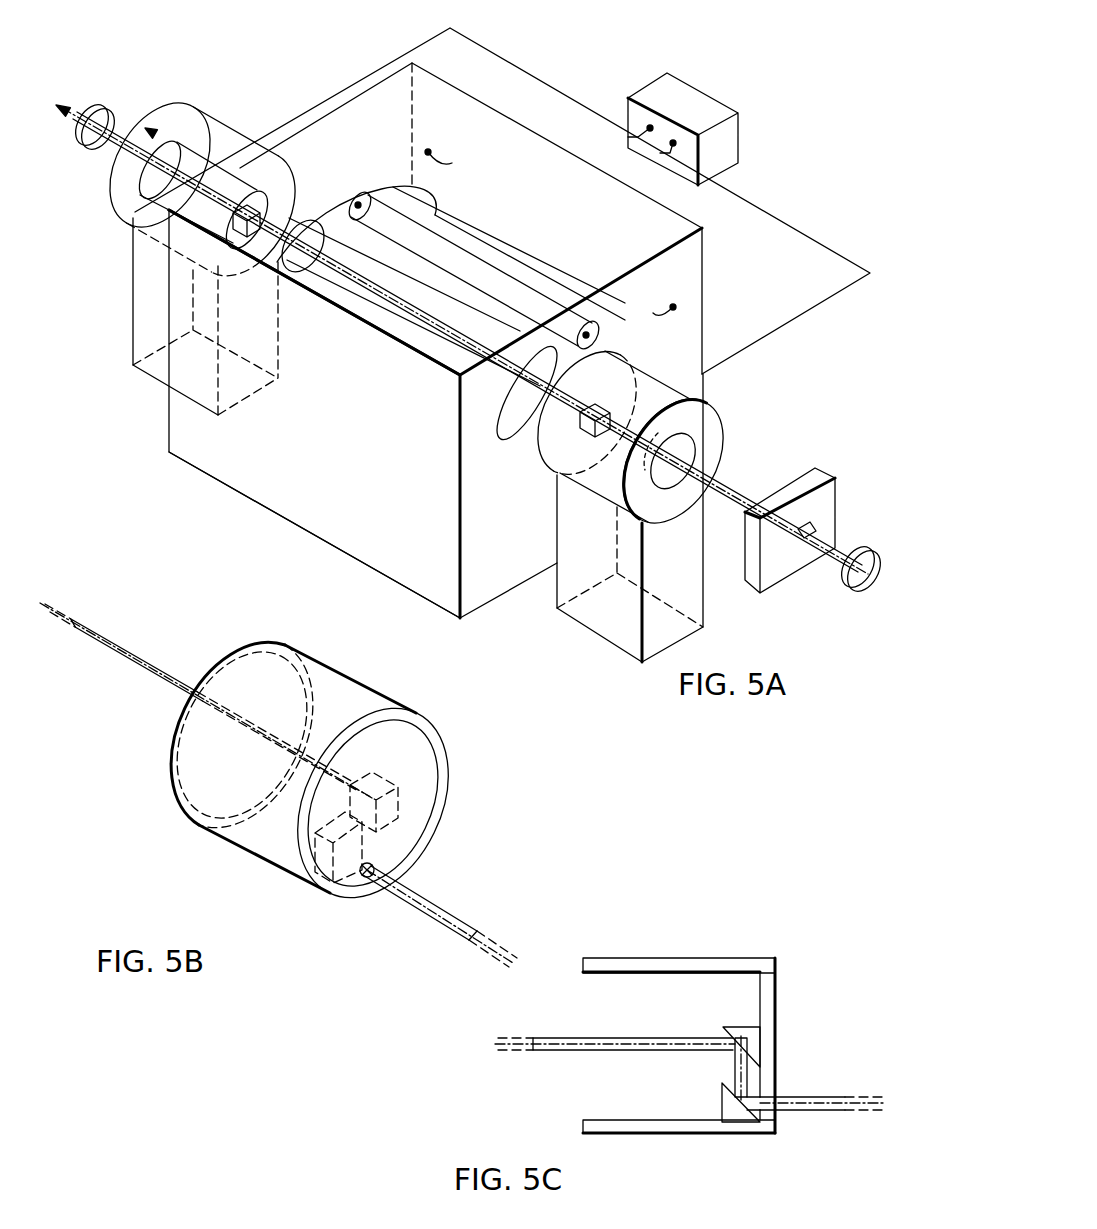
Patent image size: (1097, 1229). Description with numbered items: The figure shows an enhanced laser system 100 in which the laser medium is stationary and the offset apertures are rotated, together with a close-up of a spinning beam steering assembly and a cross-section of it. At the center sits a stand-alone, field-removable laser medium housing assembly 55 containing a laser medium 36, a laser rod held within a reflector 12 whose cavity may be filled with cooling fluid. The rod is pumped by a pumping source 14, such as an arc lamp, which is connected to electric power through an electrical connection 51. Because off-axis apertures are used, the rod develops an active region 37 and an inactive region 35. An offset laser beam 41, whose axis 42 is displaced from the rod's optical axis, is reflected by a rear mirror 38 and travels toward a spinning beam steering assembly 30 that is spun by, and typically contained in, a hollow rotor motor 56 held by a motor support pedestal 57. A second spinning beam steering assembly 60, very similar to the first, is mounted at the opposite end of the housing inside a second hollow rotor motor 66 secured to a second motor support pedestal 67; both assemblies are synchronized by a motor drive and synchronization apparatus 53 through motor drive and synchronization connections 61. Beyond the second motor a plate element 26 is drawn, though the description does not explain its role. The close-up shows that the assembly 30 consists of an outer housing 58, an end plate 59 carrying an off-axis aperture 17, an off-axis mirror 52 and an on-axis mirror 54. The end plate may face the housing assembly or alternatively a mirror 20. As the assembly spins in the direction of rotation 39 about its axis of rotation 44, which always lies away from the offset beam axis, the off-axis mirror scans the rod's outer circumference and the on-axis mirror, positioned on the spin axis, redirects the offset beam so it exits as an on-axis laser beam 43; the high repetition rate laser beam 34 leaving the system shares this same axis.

In FIG. 5A, the reflector 12 is at (463, 213).
In FIG. 5A, the pumping source 14 is at (472, 247).
In FIG. 5B, the off-axis aperture 17 is at (363, 883).
In FIG. 5C, the off-axis aperture 17 is at (767, 1087).
In FIG. 5A, the mirror 20 is at (112, 115).
In FIG. 5A, the end plate 26 is at (815, 468).
In FIG. 5A, the spinning beam steering assembly 30 is at (240, 160).
In FIG. 5B, the spinning beam steering assembly 30 is at (446, 711).
In FIG. 5C, the spinning beam steering assembly 30 is at (683, 908).
In FIG. 5A, the high repetition rate laser beam 34 is at (72, 102).
In FIG. 5A, the inactive region 35 is at (470, 307).
In FIG. 5A, the laser medium 36 is at (443, 367).
In FIG. 5A, the active region 37 is at (282, 300).
In FIG. 5A, the rear mirror 38 is at (862, 583).
In FIG. 5A, the direction of rotation 39 is at (137, 200).
In FIG. 5A, the offset laser beam 41 is at (273, 220).
In FIG. 5B, the offset laser beam 41 is at (480, 927).
In FIG. 5C, the offset laser beam 41 is at (810, 1118).
In FIG. 5A, the offset laser beam axis 42 is at (280, 270).
In FIG. 5B, the offset laser beam axis 42 is at (457, 913).
In FIG. 5C, the offset laser beam axis 42 is at (834, 1115).
In FIG. 5A, the on-axis laser beam 43 is at (122, 168).
In FIG. 5B, the on-axis laser beam 43 is at (123, 643).
In FIG. 5C, the on-axis laser beam 43 is at (568, 1052).
In FIG. 5A, the axis of rotation 44 is at (150, 130).
In FIG. 5B, the axis of rotation 44 is at (167, 690).
In FIG. 5C, the axis of rotation 44 is at (548, 1040).
In FIG. 5A, the electrical connection 51 is at (431, 153).
In FIG. 5B, the off-axis mirror 52 is at (323, 893).
In FIG. 5C, the off-axis mirror 52 is at (748, 1124).
In FIG. 5A, the motor drive and synchronization apparatus 53 is at (740, 133).
In FIG. 5B, the on-axis mirror 54 is at (373, 765).
In FIG. 5C, the on-axis mirror 54 is at (752, 1038).
In FIG. 5A, the laser medium housing assembly 55 is at (294, 523).
In FIG. 5A, the hollow rotor motor 56 is at (236, 140).
In FIG. 5A, the motor support pedestal 57 is at (145, 342).
In FIG. 5B, the outer housing 58 is at (257, 860).
In FIG. 5C, the outer housing 58 is at (643, 962).
In FIG. 5B, the end plate 59 is at (417, 760).
In FIG. 5C, the end plate 59 is at (770, 985).
In FIG. 5A, the second spinning beam steering assembly 60 is at (683, 493).
In FIG. 5A, the motor drive and synchronization connections 61 is at (543, 83).
In FIG. 5A, the second hollow rotor motor 66 is at (725, 462).
In FIG. 5A, the second motor support pedestal 67 is at (698, 597).
In FIG. 5A, the enhanced laser system 100 is at (580, 93).